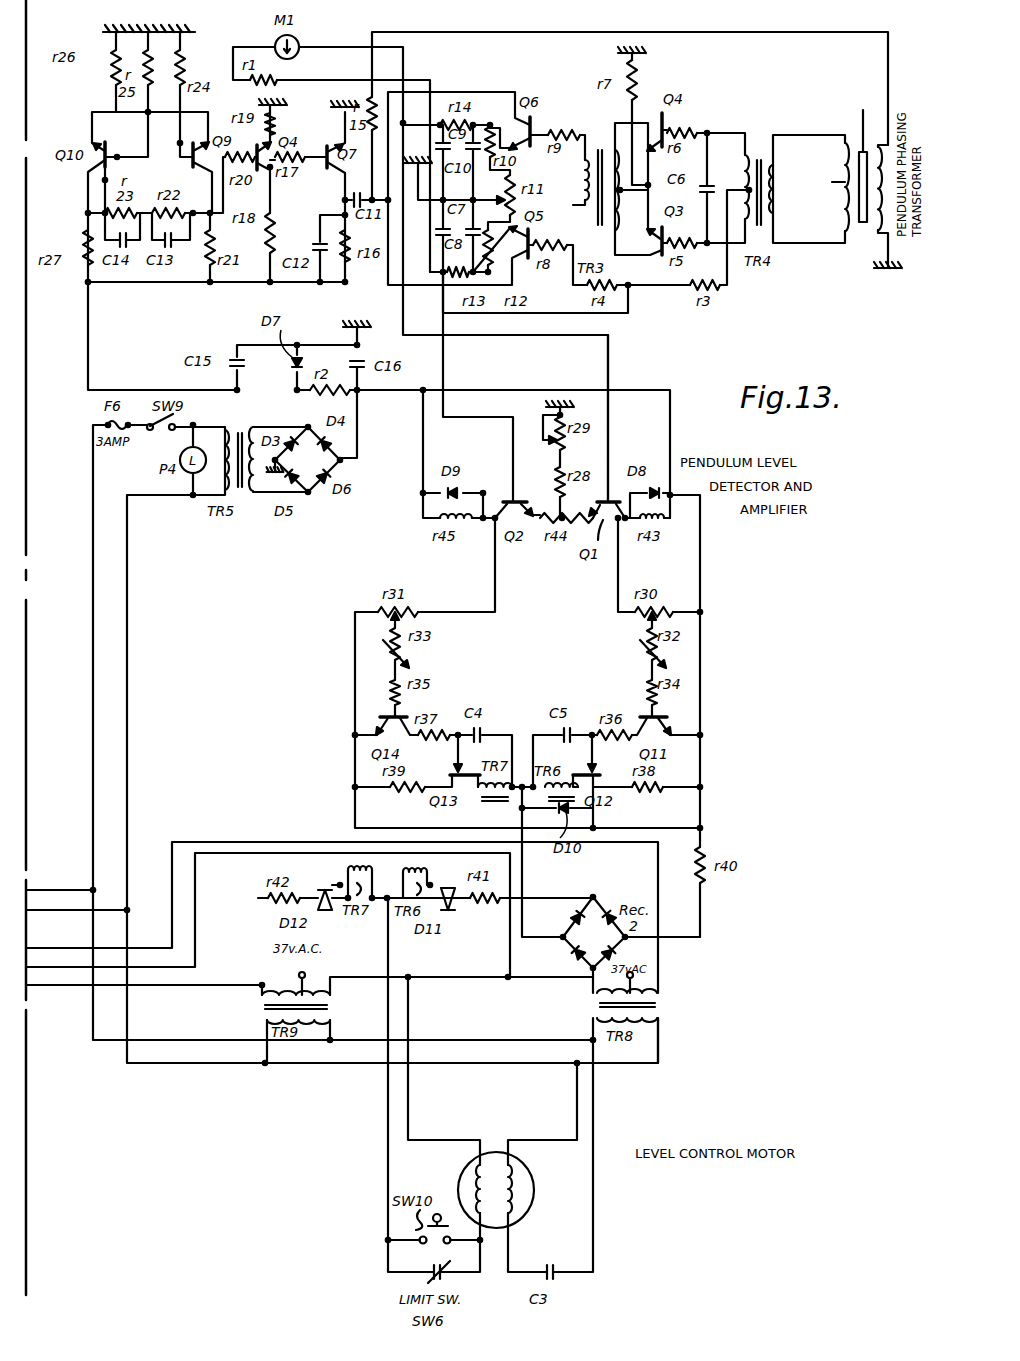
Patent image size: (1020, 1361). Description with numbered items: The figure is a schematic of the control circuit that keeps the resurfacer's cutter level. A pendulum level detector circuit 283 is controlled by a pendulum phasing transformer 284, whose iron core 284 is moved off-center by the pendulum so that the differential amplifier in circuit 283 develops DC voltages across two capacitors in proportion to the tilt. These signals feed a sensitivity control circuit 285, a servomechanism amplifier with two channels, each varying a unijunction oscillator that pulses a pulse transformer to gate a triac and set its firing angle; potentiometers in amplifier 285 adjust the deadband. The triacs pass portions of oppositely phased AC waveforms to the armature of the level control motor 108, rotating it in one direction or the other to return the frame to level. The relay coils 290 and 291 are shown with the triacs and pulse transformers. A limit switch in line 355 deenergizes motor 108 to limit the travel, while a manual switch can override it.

The level control motor 108 is at (530, 1188).
The pendulum level detector circuit 283 is at (720, 329).
The pendulum phasing transformer 284 is at (858, 124).
The sensitivity control circuit 285 is at (726, 672).
The relay coil TR7 290 is at (345, 866).
The relay coil TR6 291 is at (432, 868).
The line 355 is at (386, 1268).